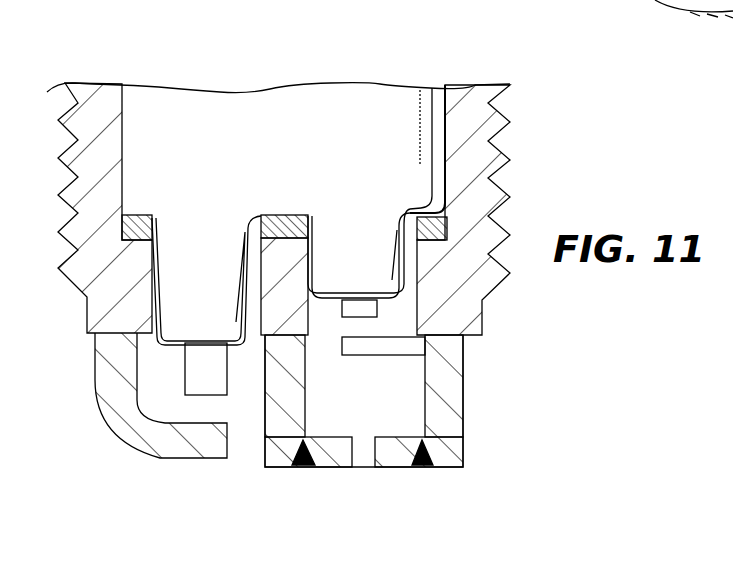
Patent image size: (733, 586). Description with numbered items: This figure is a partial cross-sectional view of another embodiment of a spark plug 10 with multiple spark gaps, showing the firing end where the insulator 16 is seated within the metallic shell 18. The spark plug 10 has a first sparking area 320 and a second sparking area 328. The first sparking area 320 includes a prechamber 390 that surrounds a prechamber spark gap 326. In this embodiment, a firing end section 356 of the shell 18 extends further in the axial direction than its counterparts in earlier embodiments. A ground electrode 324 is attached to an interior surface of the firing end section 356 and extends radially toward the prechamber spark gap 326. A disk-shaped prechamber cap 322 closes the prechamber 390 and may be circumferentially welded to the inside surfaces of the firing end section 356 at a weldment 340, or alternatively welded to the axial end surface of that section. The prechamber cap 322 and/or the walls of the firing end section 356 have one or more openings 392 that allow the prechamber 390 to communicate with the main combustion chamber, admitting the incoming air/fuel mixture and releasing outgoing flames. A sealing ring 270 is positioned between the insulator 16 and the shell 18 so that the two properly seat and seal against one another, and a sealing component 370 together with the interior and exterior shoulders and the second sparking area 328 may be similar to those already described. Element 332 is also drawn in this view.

The spark plug 10 is at (483, 48).
The insulator 16 is at (403, 140).
The metallic shell 18 is at (477, 188).
The sealing ring 270 is at (279, 213).
The sealing component 370 is at (268, 215).
The ground electrode 324 is at (383, 345).
The prechamber spark gap 326 is at (337, 320).
The firing end section 356 is at (450, 370).
The openings 392 is at (445, 412).
The weldment 340 is at (448, 445).
The prechamber cap 322 is at (393, 458).
The first sparking area 320 is at (453, 515).
The second sparking area 328 is at (122, 460).
The post 332 is at (233, 407).
The prechamber 390 is at (333, 413).